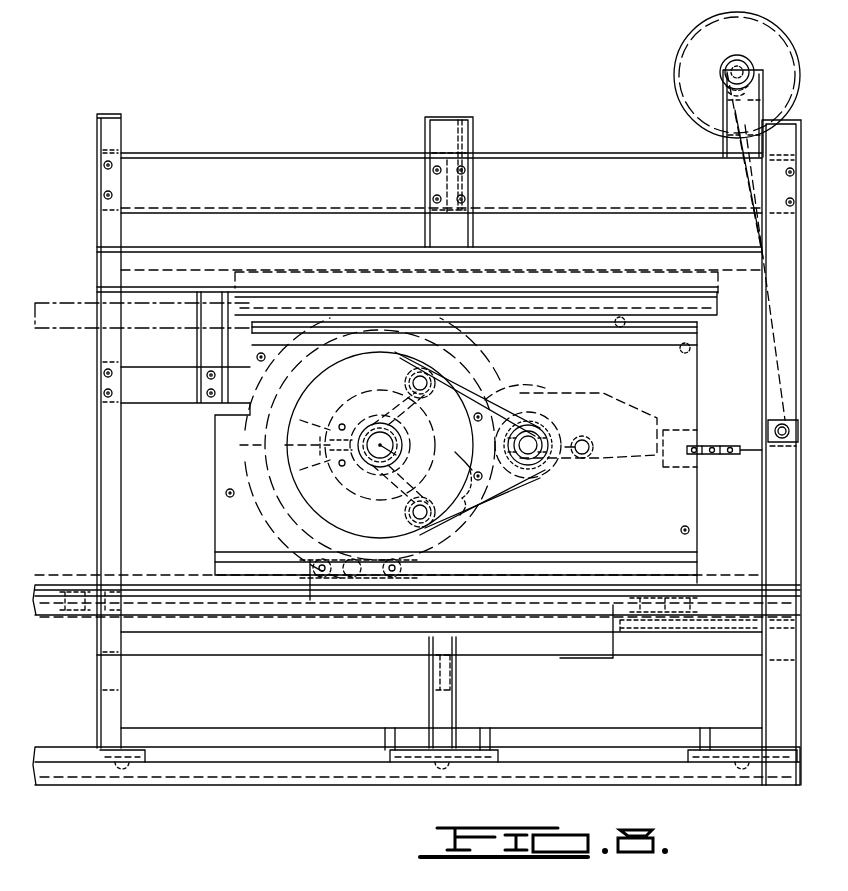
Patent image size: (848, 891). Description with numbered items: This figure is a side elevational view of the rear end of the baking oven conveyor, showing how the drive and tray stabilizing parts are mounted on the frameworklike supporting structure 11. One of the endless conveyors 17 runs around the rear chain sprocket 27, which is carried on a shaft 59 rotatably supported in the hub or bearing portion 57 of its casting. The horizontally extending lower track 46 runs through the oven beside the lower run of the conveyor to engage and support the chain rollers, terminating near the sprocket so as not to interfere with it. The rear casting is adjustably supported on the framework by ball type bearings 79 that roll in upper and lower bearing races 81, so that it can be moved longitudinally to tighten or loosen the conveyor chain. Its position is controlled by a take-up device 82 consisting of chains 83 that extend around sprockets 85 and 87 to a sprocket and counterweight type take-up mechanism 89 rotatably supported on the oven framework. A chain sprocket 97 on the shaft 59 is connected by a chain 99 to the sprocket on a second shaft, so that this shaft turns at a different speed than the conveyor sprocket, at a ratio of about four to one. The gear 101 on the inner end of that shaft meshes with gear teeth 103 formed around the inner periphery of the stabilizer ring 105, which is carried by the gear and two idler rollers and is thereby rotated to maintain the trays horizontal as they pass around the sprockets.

The frameworklike supporting structure 11 is at (95, 681).
The endless conveyor 17 is at (312, 580).
The conveyor chain sprocket 27 is at (220, 484).
The lower track 46 is at (80, 600).
The hub or bearing portion 57 is at (396, 455).
The shaft 59 is at (386, 446).
The ball type bearings 79 is at (620, 322).
The bearing races 81 is at (700, 324).
The take-up device 82 is at (733, 444).
The chains 83 is at (700, 456).
The sprocket 85 is at (775, 418).
The sprocket 87 is at (739, 60).
The sprocket and counterweight type take-up mechanism 89 is at (678, 72).
The chain sprocket 97 is at (492, 500).
The chain 99 is at (548, 488).
The gear 101 is at (545, 430).
The gear teeth 103 is at (560, 364).
The stabilizer ring 105 is at (587, 456).